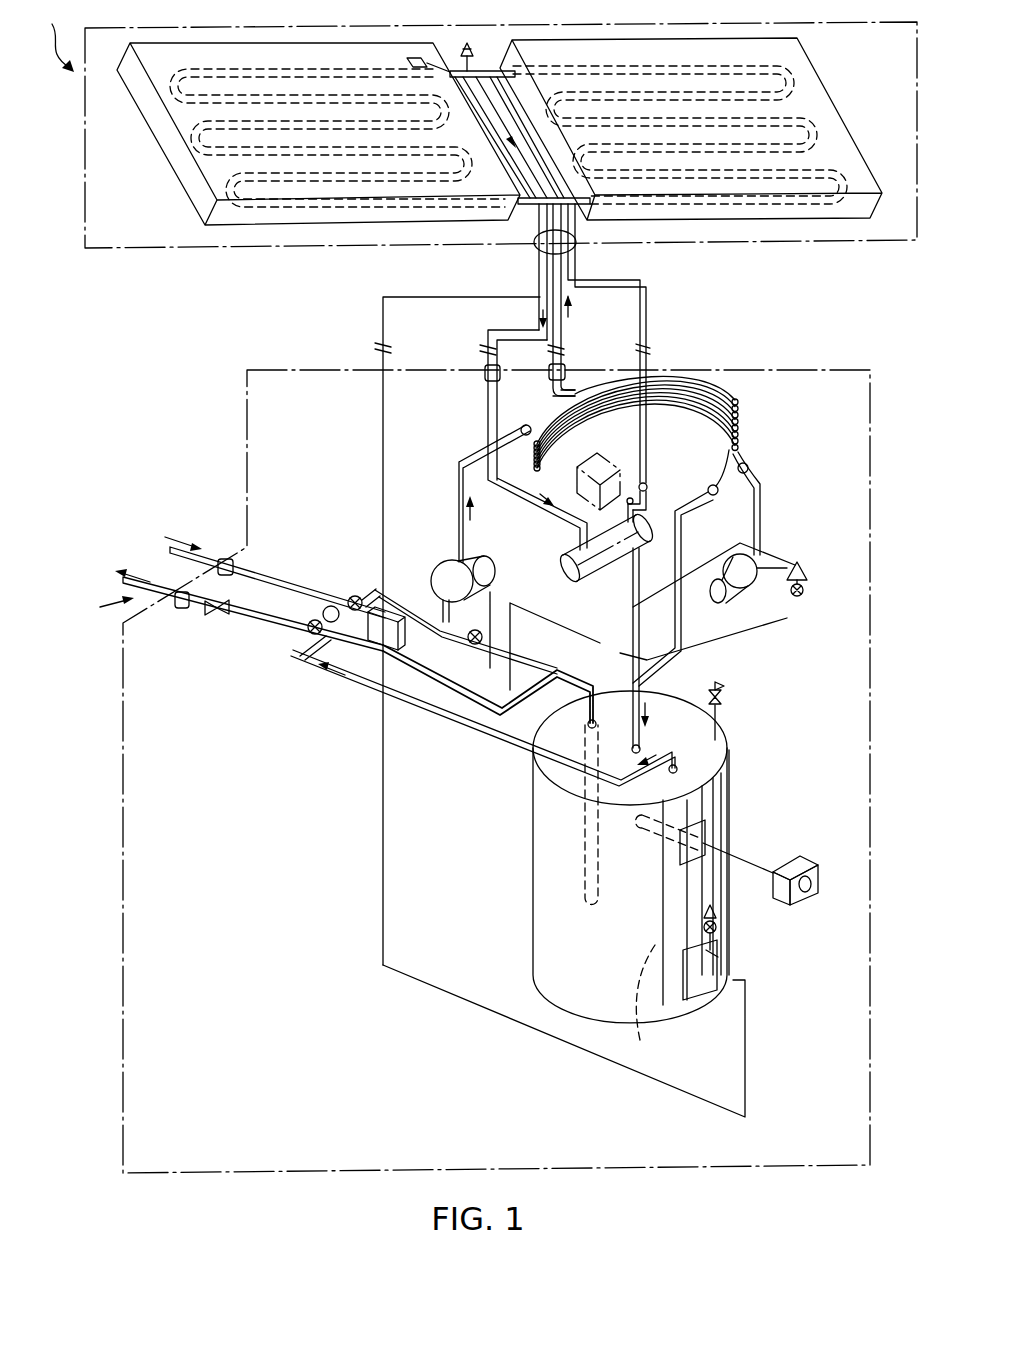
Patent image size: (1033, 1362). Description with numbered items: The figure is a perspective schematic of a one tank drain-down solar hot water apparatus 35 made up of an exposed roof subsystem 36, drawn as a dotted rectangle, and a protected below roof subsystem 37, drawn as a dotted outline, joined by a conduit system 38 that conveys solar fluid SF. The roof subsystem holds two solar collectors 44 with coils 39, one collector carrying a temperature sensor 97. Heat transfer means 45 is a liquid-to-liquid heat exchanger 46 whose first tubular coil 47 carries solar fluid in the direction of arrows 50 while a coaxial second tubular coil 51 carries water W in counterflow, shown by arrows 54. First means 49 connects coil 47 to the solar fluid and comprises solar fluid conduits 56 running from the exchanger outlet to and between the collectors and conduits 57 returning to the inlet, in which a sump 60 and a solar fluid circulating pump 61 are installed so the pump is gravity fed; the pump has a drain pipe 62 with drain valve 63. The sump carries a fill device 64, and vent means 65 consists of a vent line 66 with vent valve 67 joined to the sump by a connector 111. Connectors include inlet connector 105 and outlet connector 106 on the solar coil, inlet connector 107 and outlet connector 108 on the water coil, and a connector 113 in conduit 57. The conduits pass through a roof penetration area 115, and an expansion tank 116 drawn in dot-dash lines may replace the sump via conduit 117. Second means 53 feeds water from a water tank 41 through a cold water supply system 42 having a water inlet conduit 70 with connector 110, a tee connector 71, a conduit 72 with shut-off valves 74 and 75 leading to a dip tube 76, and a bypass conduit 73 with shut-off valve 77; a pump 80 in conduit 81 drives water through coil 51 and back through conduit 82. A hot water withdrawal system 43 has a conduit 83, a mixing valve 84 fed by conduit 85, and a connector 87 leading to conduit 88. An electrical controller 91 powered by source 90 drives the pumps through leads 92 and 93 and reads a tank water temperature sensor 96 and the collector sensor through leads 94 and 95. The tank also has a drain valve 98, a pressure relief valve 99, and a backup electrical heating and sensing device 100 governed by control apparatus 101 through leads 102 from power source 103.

The solar hot water heating apparatus 35 is at (48, 36).
The solar collector subsystem 36 is at (170, 250).
The below roof subsystem 37 is at (228, 410).
The conduit system 38 is at (605, 250).
The coils 39 is at (815, 138).
The water tank 41 is at (730, 792).
The cold water supply system 42 is at (198, 540).
The hot water withdrawal system 43 is at (96, 607).
The solar collectors 44 is at (815, 92).
The heat transfer means 45 is at (714, 380).
The solar liquid-to-liquid heat exchanger 46 is at (745, 397).
The first tubular coil 47 is at (556, 392).
The first means 49 is at (795, 527).
The arrows 50 is at (568, 366).
The second tubular coil 51 is at (560, 410).
The second means 53 is at (438, 539).
The arrows 54 is at (475, 456).
The solar fluid conduits 56 is at (510, 71).
The solar fluid conduits 57 is at (490, 330).
The sump 60 is at (566, 556).
The solar fluid circulating pump 61 is at (748, 586).
The drain pipe 62 is at (800, 561).
The drain valve 63 is at (805, 590).
The fill device 64 is at (650, 489).
The vent means 65 is at (460, 36).
The vent line 66 is at (650, 302).
The vent valve 67 is at (485, 70).
The water inlet conduit 70 is at (257, 562).
The tee connector 71 is at (331, 606).
The conduit 72 is at (378, 588).
The conduit 73 is at (312, 648).
The shut-off valve 74 is at (356, 596).
The shut-off valve 75 is at (477, 629).
The dip tube 76 is at (585, 832).
The shut-off valve 77 is at (308, 624).
The pump 80 is at (433, 572).
The conduit 81 is at (455, 490).
The conduit 82 is at (684, 628).
The conduit 83 is at (540, 750).
The mixing valve 84 is at (216, 618).
The conduit 85 is at (210, 578).
The connector 87 is at (180, 610).
The conduit 88 is at (122, 568).
The power source 90 is at (314, 683).
The electrical controller 91 is at (383, 660).
The electrical lead 92 is at (513, 633).
The electrical lead 93 is at (500, 603).
The lead 94 is at (383, 830).
The lead 95 is at (383, 412).
The water temperature sensor 96 is at (656, 1003).
The temperature sensor 97 is at (412, 57).
The drain valve 98 is at (722, 956).
The pressure relief valve 99 is at (723, 698).
The electrical heating and water temperature sensing device 100 is at (712, 818).
The control apparatus 101 is at (800, 857).
The leads 102 is at (752, 868).
The power source 103 is at (830, 858).
The inlet connector 105 is at (746, 462).
The outlet connector 106 is at (529, 358).
The inlet connector 107 is at (520, 428).
The outlet connector 108 is at (723, 494).
The connector 110 is at (234, 560).
The connector 111 is at (648, 486).
The connector 113 is at (485, 375).
The roof penetration area 115 is at (535, 246).
The expansion tank 116 is at (578, 484).
The conduit 117 is at (601, 555).
The solar fluid SF is at (560, 570).
The water W is at (540, 922).